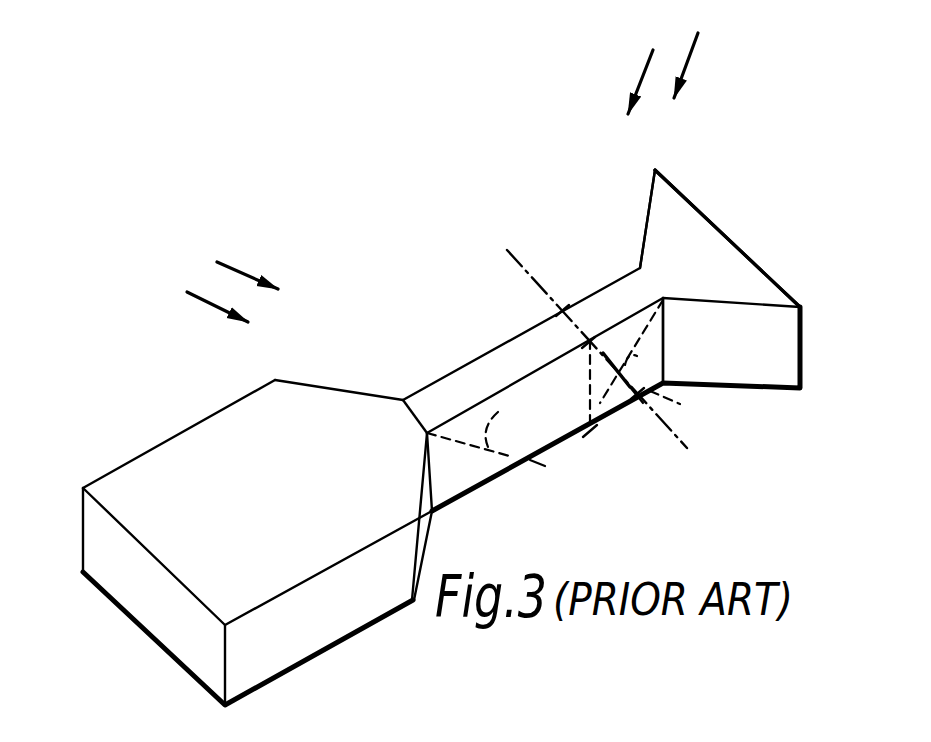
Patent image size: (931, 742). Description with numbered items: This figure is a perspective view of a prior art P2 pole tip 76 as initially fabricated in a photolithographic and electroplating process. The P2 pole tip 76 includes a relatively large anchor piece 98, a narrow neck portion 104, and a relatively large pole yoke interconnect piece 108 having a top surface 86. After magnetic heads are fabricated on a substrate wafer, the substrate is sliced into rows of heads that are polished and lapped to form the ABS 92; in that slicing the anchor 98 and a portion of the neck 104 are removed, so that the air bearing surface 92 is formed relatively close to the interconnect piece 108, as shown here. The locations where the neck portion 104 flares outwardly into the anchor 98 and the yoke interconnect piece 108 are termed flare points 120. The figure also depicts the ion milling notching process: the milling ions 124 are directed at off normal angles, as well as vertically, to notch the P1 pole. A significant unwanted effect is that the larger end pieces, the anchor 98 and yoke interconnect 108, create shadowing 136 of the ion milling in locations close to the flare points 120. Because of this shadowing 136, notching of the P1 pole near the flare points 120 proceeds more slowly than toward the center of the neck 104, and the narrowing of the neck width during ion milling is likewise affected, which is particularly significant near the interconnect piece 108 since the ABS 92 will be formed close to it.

The P2 pole tip 76 is at (446, 433).
The top surface 86 is at (732, 260).
The ABS (air bearing surface) 92 is at (518, 264).
The anchor piece 98 is at (279, 525).
The neck portion 104 is at (511, 352).
The pole yoke interconnect piece 108 is at (693, 203).
The flare points 120 is at (636, 266).
The milling ions 124 is at (688, 52).
The shadowing 136 is at (583, 383).